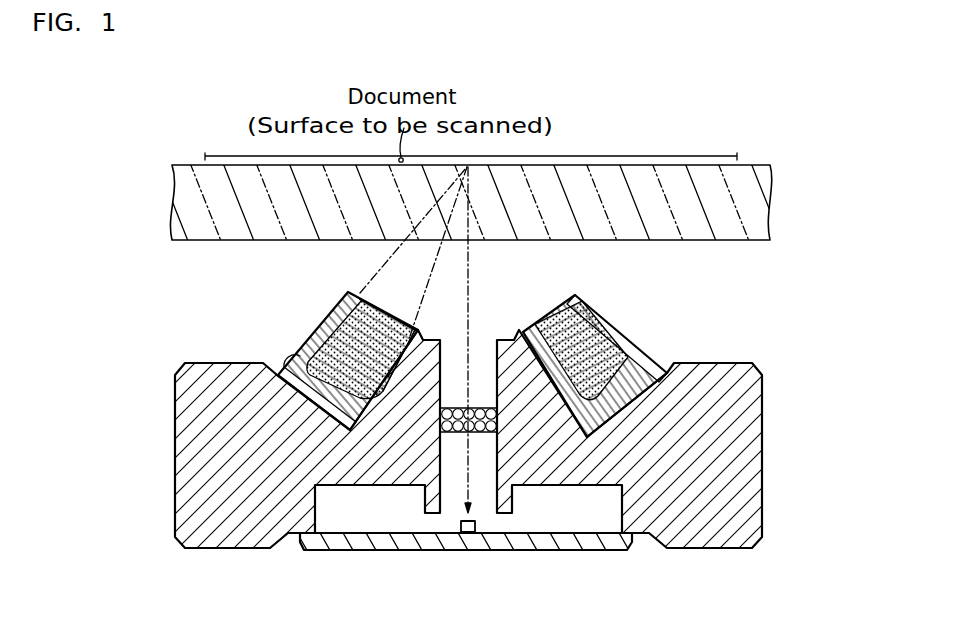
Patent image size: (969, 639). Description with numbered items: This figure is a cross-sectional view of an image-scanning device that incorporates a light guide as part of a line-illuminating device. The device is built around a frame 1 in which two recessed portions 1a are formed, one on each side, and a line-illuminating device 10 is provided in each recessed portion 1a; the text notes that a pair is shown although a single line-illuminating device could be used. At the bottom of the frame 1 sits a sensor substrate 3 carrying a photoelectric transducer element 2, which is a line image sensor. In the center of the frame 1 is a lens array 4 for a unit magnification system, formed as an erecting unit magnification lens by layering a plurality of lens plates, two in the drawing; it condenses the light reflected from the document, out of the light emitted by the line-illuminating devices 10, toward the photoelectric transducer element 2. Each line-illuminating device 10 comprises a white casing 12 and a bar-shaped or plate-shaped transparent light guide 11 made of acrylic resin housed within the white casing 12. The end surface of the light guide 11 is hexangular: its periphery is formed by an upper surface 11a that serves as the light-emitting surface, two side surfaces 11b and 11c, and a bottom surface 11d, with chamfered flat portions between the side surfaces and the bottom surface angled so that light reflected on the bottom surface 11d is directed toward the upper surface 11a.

The frame 1 is at (742, 488).
The recessed portion 1a is at (293, 365).
The photoelectric transducer element 2 is at (478, 526).
The sensor substrate 3 is at (560, 545).
The lens array 4 is at (482, 405).
The line-illuminating device 10 is at (459, 360).
The light guide 11 is at (573, 330).
The upper surface 11a is at (388, 300).
The side surface 11b is at (337, 308).
The side surface 11c is at (386, 398).
The bottom surface 11d is at (310, 404).
The white casing 12 is at (620, 335).